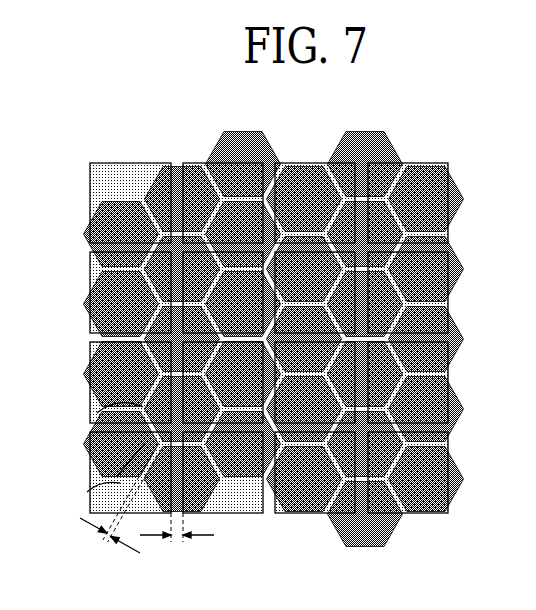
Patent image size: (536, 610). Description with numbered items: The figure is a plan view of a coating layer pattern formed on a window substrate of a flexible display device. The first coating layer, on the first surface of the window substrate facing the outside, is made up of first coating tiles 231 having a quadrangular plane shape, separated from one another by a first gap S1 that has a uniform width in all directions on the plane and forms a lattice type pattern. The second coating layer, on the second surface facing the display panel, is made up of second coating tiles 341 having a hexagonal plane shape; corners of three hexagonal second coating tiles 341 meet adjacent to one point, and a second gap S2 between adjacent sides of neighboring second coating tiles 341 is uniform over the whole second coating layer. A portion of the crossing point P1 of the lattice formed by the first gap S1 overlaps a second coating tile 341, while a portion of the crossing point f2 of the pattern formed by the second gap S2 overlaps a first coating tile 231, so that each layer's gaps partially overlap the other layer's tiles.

The first coating tile 231 is at (132, 163).
The second coating tile 341 is at (222, 129).
The crossing point P1 is at (78, 492).
The crossing point f2 is at (88, 410).
The first gap S1 is at (177, 542).
The second gap S2 is at (118, 512).